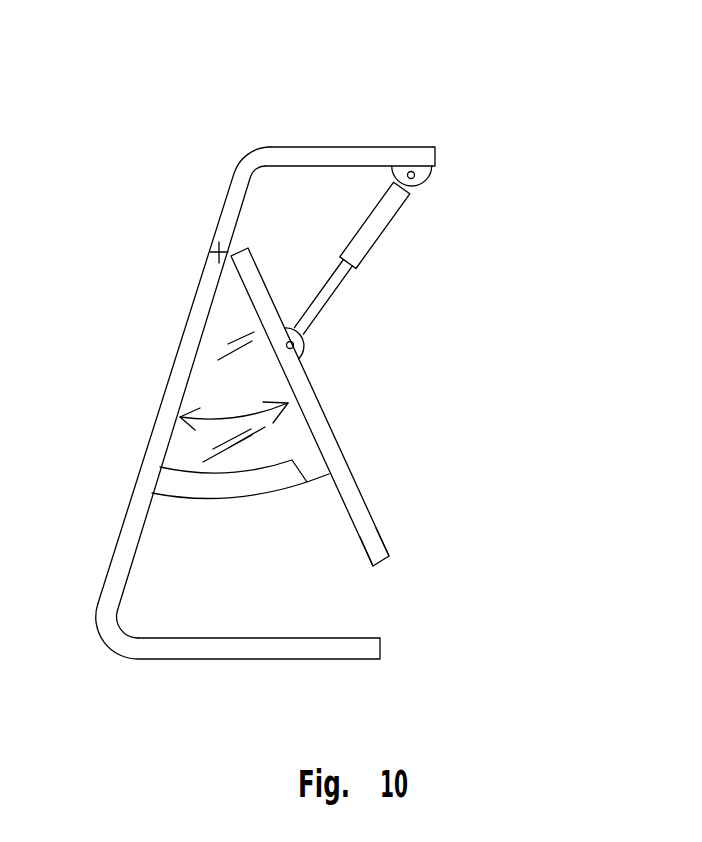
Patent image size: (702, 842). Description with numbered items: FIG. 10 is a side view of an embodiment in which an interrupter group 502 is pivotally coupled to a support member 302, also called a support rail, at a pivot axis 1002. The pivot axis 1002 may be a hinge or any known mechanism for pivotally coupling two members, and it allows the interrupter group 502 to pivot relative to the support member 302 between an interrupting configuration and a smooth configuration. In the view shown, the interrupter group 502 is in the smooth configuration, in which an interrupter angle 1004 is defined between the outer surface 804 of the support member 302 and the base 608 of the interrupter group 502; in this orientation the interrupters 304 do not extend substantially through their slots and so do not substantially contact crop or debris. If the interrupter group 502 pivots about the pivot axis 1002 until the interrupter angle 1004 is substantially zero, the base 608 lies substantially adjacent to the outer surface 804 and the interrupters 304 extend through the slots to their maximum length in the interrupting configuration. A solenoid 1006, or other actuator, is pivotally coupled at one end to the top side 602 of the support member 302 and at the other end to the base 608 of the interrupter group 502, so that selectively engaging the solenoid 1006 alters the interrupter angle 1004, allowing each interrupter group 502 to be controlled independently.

The support member 302 is at (247, 163).
The interrupters 304 is at (265, 455).
The interrupter group 502 is at (373, 537).
The top side 602 is at (330, 138).
The base 608 is at (352, 497).
The outer surface 804 is at (129, 577).
The pivot axis 1002 is at (220, 252).
The interrupter angle 1004 is at (237, 413).
The solenoid 1006 is at (380, 223).